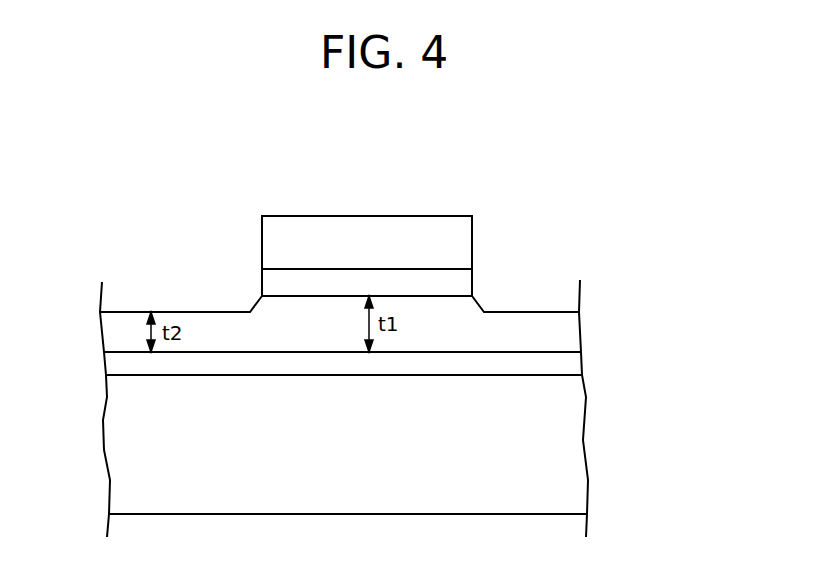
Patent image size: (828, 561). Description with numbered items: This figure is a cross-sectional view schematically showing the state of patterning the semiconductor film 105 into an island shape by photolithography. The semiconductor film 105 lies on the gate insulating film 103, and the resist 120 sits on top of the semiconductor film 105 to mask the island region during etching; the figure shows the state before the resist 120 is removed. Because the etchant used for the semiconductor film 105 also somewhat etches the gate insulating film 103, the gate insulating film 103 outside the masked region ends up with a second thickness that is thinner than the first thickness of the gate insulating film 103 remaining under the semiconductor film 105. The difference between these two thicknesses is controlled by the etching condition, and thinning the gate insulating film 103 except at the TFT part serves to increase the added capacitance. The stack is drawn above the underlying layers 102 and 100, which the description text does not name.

The substrate 100 is at (567, 438).
The buffer layer 102 is at (565, 364).
The gate insulating film 103 is at (563, 330).
The semiconductor film 105 is at (458, 281).
The resist 120 is at (411, 233).